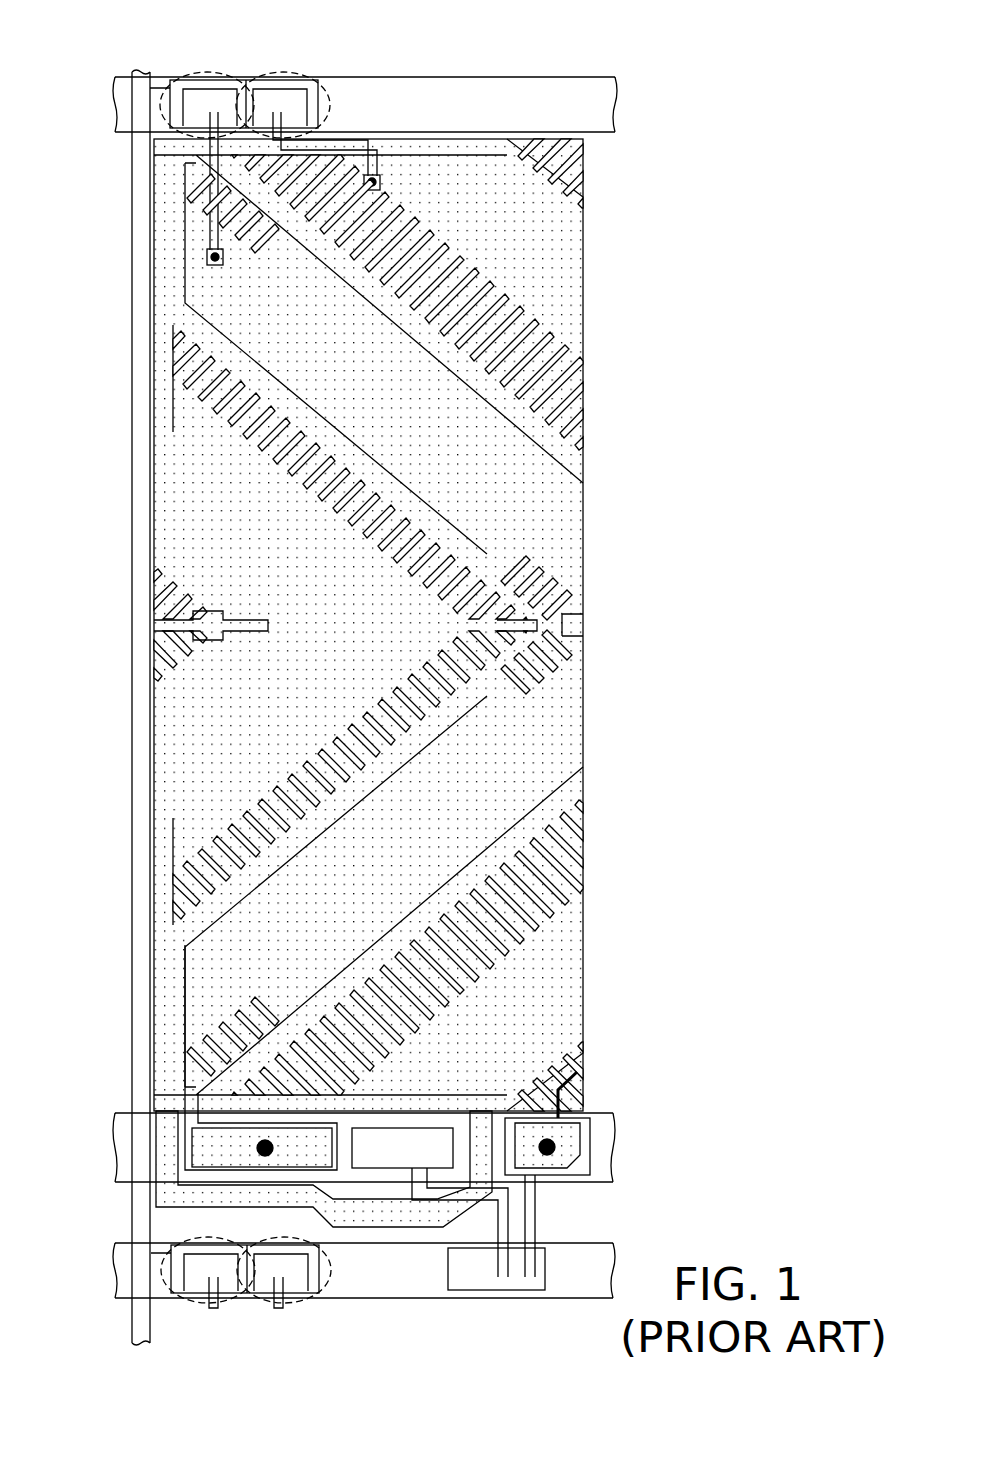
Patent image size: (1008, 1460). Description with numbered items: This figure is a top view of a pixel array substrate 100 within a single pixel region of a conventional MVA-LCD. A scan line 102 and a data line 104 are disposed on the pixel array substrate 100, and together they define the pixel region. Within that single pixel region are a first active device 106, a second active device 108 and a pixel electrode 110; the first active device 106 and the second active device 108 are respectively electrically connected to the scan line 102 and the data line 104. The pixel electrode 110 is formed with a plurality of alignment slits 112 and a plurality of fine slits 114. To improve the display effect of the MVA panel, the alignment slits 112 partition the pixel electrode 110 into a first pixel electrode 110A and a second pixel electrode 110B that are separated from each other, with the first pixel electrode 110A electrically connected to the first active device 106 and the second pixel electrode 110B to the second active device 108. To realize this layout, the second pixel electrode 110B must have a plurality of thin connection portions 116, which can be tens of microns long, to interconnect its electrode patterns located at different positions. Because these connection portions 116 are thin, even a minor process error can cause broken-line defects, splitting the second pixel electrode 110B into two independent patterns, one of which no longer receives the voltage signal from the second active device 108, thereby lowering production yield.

The pixel array substrate 100 is at (818, 1207).
The scan line 102 is at (598, 104).
The data line 104 is at (137, 293).
The first active device 106 is at (209, 76).
The second active device 108 is at (281, 73).
The pixel electrode 110 is at (677, 403).
The first pixel electrode 110A is at (582, 550).
The second pixel electrode 110B is at (560, 323).
The alignment slits 112 is at (508, 589).
The fine slits 114 is at (506, 649).
The connection portions 116 is at (175, 148).